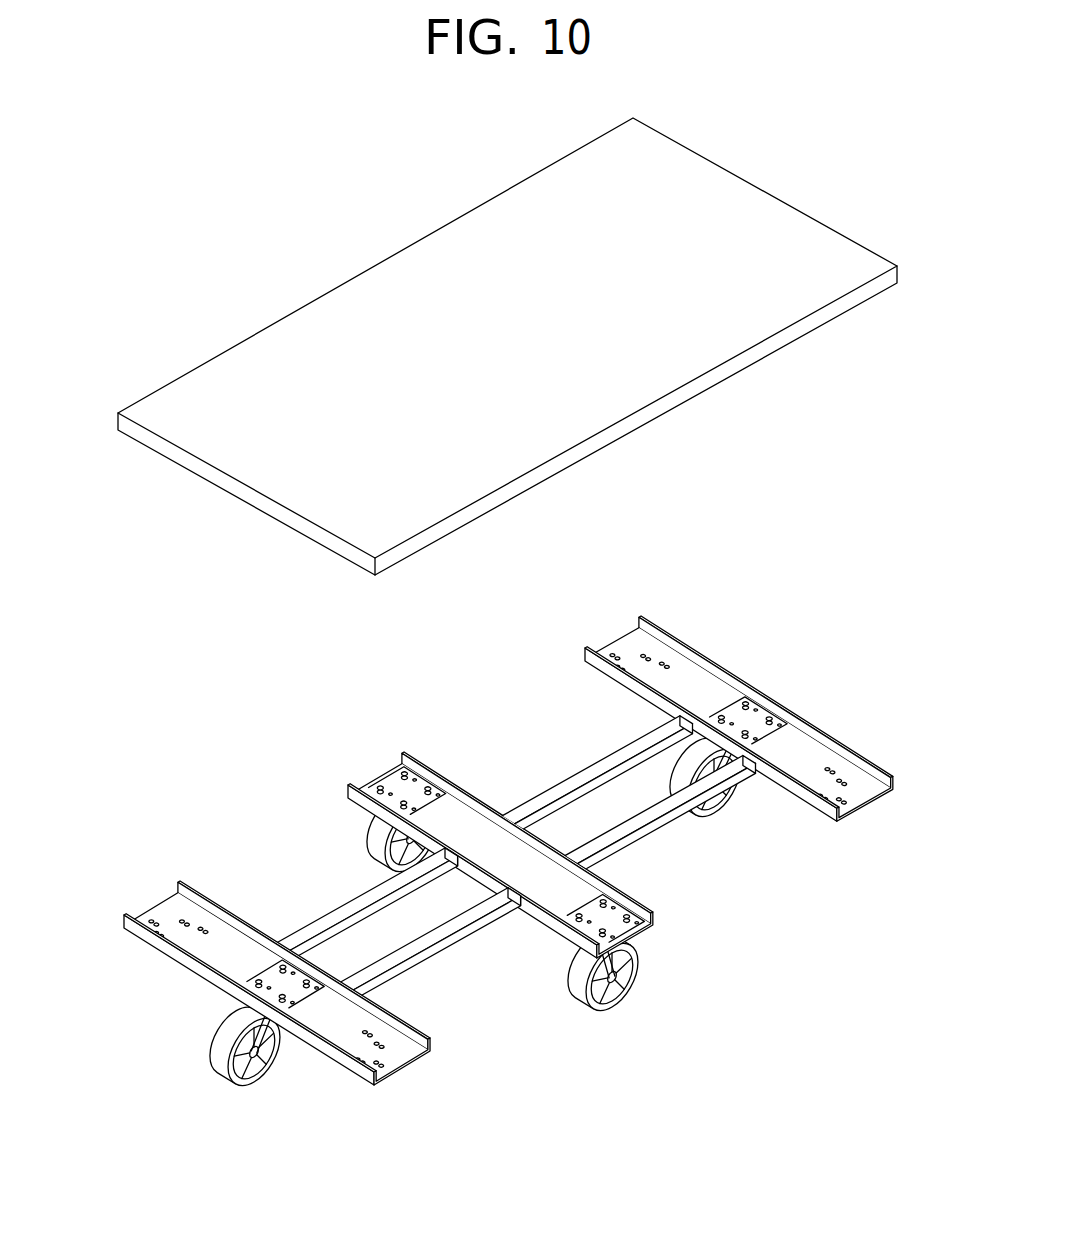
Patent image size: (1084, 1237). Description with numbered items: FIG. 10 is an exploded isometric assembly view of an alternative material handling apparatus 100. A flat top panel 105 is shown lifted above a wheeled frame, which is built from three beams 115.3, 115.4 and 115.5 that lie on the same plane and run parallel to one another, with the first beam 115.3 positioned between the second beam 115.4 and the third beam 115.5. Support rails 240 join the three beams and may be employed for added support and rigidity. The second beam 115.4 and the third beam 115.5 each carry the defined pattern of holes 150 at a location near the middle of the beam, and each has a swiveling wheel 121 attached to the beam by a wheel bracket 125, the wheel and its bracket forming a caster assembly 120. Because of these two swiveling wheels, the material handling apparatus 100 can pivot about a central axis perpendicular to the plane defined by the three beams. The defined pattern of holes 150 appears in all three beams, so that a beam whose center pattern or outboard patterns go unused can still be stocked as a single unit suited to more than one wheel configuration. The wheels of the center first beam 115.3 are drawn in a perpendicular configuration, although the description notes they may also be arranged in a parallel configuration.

The material handling apparatus 100 is at (213, 295).
The top panel 105 is at (803, 212).
The first beam 115.3 is at (453, 790).
The second beam 115.4 is at (857, 783).
The third beam 115.5 is at (165, 947).
The caster assembly 120 is at (370, 843).
The swiveling wheel 121 is at (713, 820).
The wheel bracket 125 is at (777, 733).
The defined pattern of holes 150 is at (168, 917).
The support rails 240 is at (378, 893).